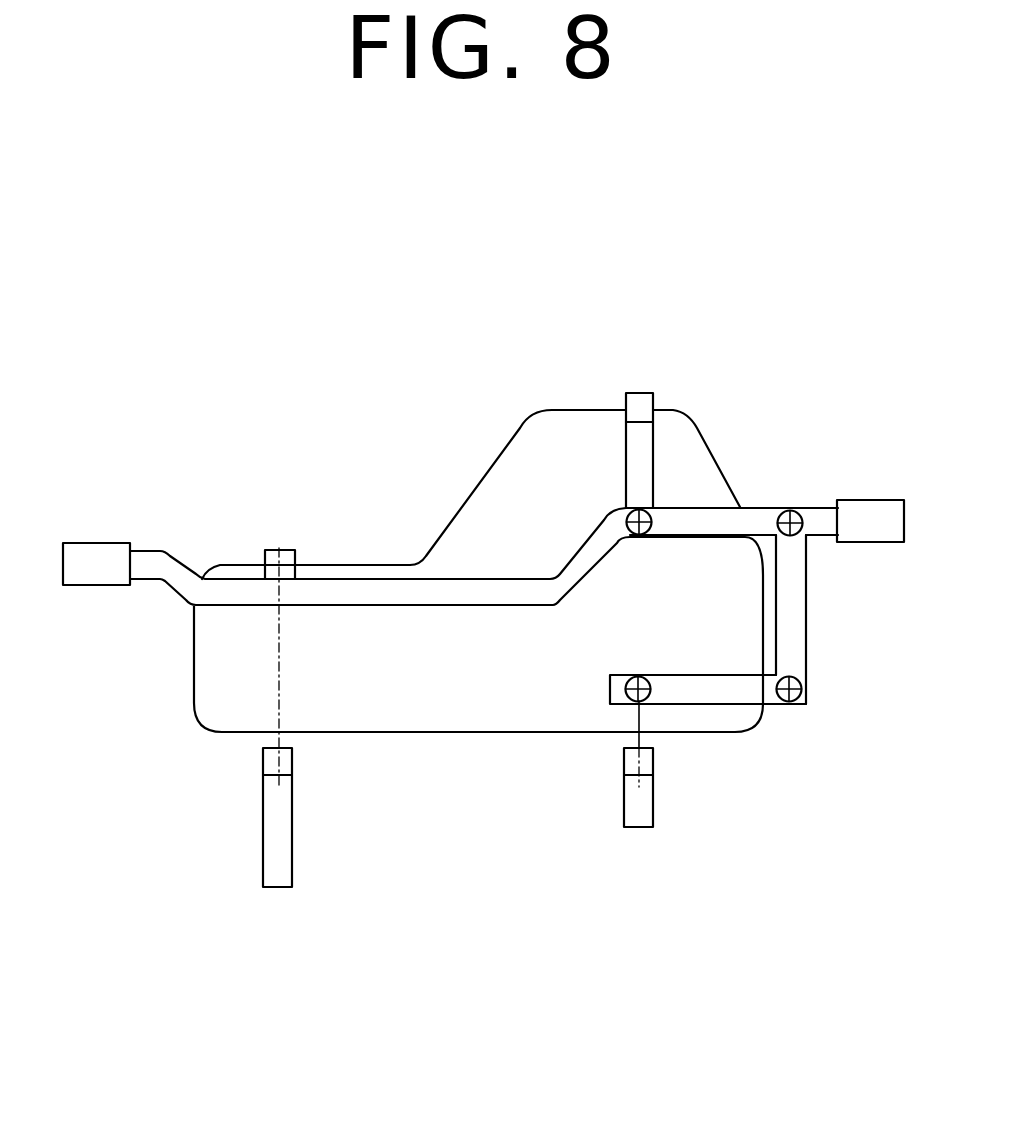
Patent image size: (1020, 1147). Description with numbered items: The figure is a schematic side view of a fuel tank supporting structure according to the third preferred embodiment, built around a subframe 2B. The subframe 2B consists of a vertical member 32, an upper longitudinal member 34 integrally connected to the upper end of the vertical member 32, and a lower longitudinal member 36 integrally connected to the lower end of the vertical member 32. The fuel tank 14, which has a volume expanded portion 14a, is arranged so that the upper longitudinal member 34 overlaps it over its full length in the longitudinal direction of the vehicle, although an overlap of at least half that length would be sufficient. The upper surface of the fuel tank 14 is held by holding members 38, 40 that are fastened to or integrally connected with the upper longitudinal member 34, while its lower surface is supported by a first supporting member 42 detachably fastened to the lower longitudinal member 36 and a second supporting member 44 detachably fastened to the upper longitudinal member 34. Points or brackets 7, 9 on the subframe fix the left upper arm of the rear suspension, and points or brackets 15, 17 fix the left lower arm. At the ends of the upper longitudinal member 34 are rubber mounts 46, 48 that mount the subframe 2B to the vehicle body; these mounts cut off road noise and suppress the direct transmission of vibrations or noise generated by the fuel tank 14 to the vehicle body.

The subframe 2B is at (750, 379).
The fuel tank 14 is at (454, 725).
The volume expanded portion 14a is at (563, 410).
The upper longitudinal member 34 is at (415, 587).
The rubber mount 46 is at (98, 545).
The holding member 40 is at (278, 548).
The holding member 38 is at (633, 398).
The fixing point (bracket) for left upper arm 7 is at (627, 523).
The fixing point (bracket) for left upper arm 9 is at (787, 507).
The rubber mount 48 is at (880, 507).
The vertical member 32 is at (798, 625).
The lower longitudinal member 36 is at (716, 700).
The fixing point (bracket) for left lower arm 15 is at (638, 680).
The fixing point (bracket) for left lower arm 17 is at (799, 690).
The first supporting member 42 is at (640, 813).
The second supporting member 44 is at (283, 873).